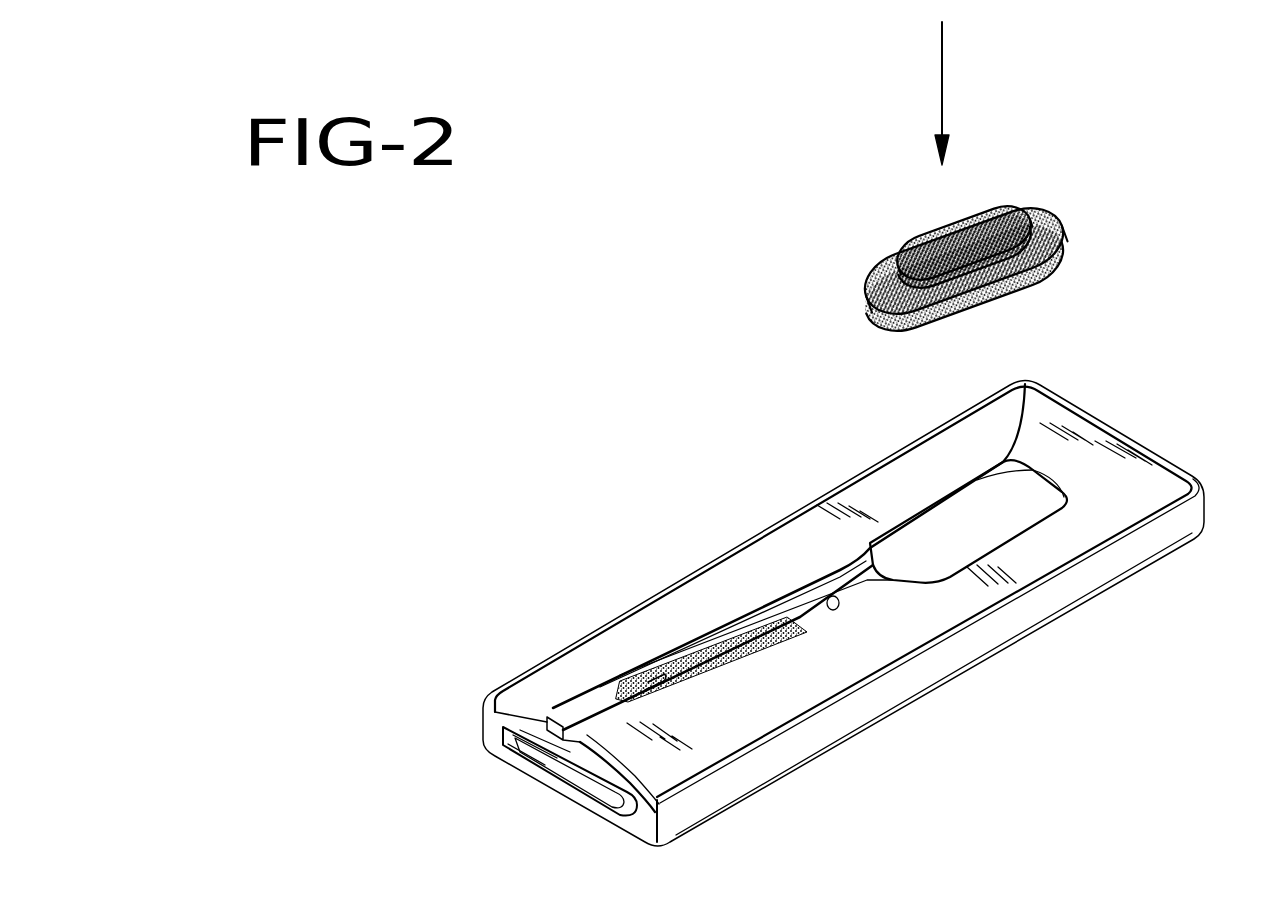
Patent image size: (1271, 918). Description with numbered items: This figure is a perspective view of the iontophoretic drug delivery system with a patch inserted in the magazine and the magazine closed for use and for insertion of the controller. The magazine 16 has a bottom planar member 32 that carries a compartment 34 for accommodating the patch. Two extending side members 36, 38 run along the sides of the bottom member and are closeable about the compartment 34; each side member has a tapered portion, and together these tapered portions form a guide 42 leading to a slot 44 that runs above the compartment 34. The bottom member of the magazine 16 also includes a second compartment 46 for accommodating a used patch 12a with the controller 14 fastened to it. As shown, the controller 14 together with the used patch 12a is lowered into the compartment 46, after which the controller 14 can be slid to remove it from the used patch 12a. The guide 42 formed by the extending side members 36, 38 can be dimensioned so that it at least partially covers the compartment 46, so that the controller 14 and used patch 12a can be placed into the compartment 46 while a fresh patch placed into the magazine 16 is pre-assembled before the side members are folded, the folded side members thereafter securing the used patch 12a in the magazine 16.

The used patch 12a is at (880, 280).
The controller 14 is at (968, 228).
The magazine 16 is at (1143, 447).
The bottom planar member 32 is at (590, 800).
The compartment 34 is at (556, 758).
The extending side member 36 is at (763, 692).
The extending side member 38 is at (674, 610).
The guide 42 is at (897, 523).
The slot 44 is at (836, 612).
The compartment 46 is at (1020, 493).